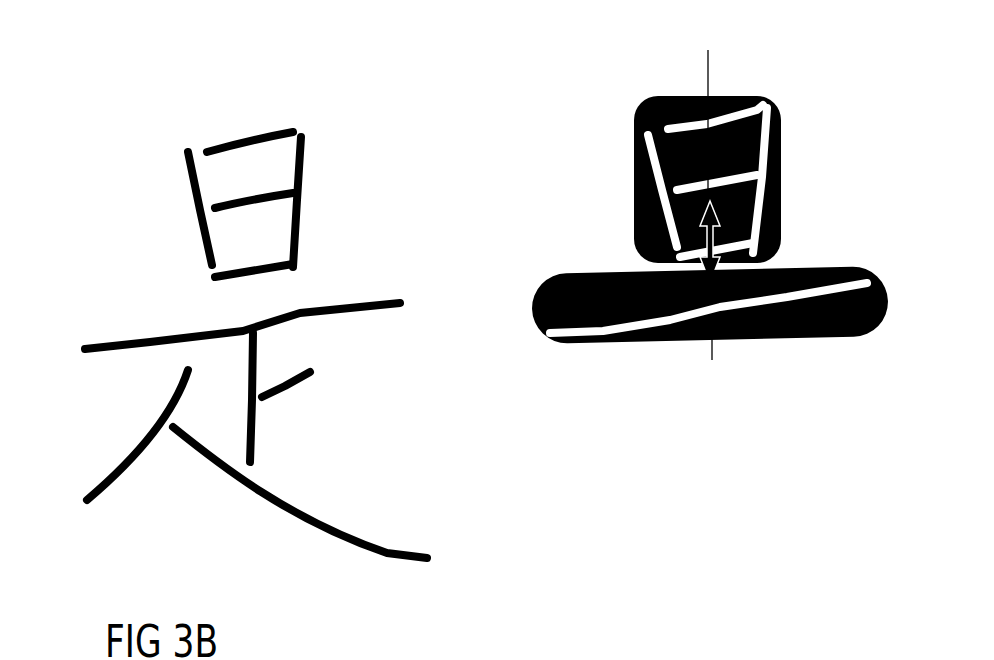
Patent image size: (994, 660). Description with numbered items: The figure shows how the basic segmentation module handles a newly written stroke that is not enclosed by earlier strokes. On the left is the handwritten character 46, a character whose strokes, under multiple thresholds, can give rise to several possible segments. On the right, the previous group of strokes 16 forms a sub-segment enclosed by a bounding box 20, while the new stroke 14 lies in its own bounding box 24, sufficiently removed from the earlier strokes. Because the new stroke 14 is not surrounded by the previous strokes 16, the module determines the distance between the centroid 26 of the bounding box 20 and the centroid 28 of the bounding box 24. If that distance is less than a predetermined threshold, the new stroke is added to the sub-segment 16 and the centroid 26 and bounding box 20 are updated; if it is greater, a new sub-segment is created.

The new stroke 14 is at (828, 290).
The previous group of strokes 16 is at (772, 110).
The bounding box 20 is at (625, 174).
The bounding box 24 is at (627, 360).
The centroid 26 is at (708, 146).
The centroid 28 is at (714, 343).
The character 46 is at (150, 147).